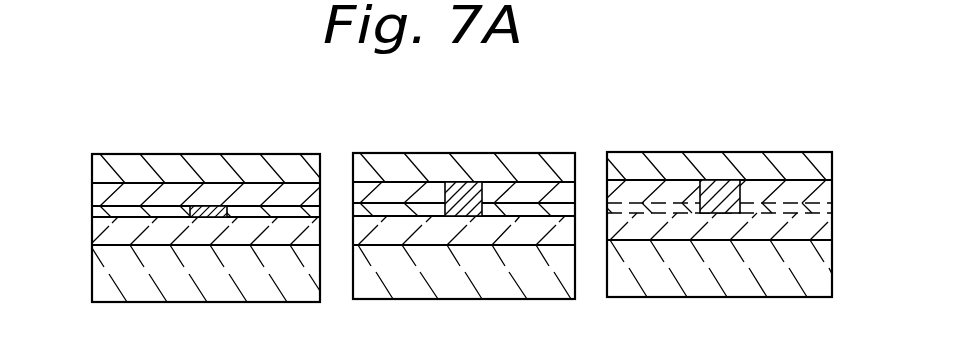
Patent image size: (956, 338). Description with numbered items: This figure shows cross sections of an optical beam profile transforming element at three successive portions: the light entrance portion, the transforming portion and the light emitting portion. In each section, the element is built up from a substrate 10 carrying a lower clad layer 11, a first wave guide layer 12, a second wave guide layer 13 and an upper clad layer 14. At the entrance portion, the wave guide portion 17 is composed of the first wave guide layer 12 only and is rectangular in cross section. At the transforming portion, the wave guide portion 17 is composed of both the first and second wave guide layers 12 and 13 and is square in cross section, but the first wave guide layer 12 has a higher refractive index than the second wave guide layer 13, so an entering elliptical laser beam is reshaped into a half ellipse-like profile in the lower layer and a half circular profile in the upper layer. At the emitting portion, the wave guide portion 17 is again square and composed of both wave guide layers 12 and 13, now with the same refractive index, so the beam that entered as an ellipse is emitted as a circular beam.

The substrate 10 is at (141, 290).
The lower clad layer 11 is at (93, 236).
The first wave guide layer 12 is at (93, 217).
The second wave guide layer 13 is at (93, 197).
The upper clad layer 14 is at (93, 165).
The wave guide 17 is at (196, 216).